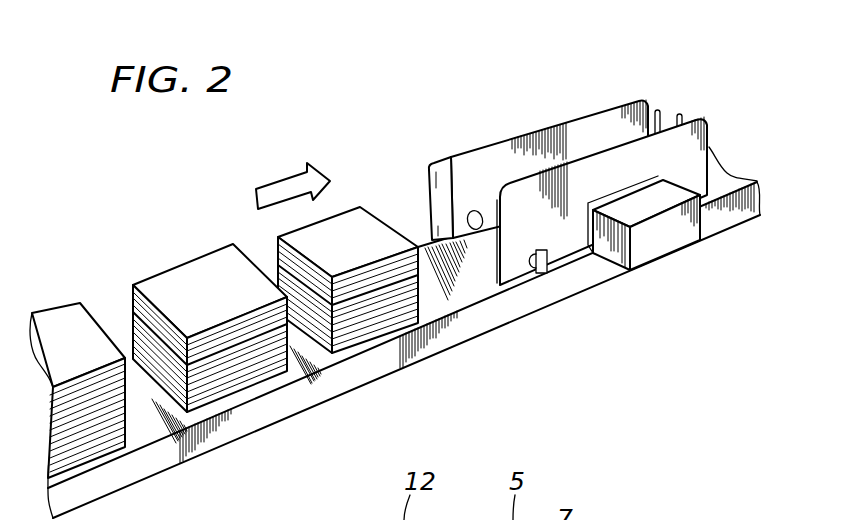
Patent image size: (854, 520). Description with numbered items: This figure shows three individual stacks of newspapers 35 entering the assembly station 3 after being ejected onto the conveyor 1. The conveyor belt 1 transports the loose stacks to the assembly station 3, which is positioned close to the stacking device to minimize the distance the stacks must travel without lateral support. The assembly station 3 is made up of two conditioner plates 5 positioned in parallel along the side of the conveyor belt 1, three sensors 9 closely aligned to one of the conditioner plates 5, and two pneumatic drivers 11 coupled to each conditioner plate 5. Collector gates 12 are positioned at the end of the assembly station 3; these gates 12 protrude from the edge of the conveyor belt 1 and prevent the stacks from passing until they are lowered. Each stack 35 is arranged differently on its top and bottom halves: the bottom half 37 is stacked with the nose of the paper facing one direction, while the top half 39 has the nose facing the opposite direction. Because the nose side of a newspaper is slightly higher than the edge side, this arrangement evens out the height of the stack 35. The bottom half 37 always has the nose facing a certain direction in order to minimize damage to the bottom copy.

The conveyor 1 is at (445, 310).
The assembly station 3 is at (603, 152).
The conditioner plate 5 is at (604, 152).
The sensor 9 is at (547, 268).
The pneumatic driver 11 is at (669, 233).
The collector gate 12 is at (680, 112).
The stack of newspapers 35 is at (183, 276).
The bottom half 37 is at (260, 376).
The top half 39 is at (210, 358).